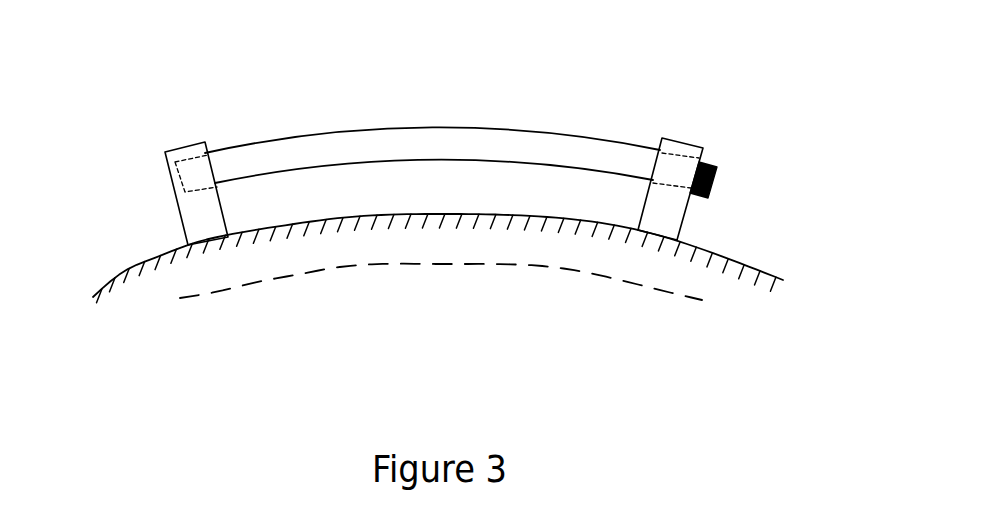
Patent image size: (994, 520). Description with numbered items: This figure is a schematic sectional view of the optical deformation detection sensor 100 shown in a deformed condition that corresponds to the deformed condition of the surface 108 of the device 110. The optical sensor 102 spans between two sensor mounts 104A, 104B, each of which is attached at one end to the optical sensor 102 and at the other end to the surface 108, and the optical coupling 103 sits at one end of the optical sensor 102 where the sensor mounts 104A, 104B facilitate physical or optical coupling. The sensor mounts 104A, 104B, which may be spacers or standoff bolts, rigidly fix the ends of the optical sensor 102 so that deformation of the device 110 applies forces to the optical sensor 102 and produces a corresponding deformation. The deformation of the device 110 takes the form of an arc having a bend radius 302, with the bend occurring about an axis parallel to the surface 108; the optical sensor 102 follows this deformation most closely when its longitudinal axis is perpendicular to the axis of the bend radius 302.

The optical deformation detection sensor 100 is at (112, 70).
The optical sensor 102 is at (627, 144).
The optical coupling 103 is at (710, 133).
The sensor mount 104A is at (202, 211).
The sensor mount 104B is at (670, 212).
The surface 108 is at (128, 265).
The device 110 is at (772, 375).
The bend radius 302 is at (242, 284).